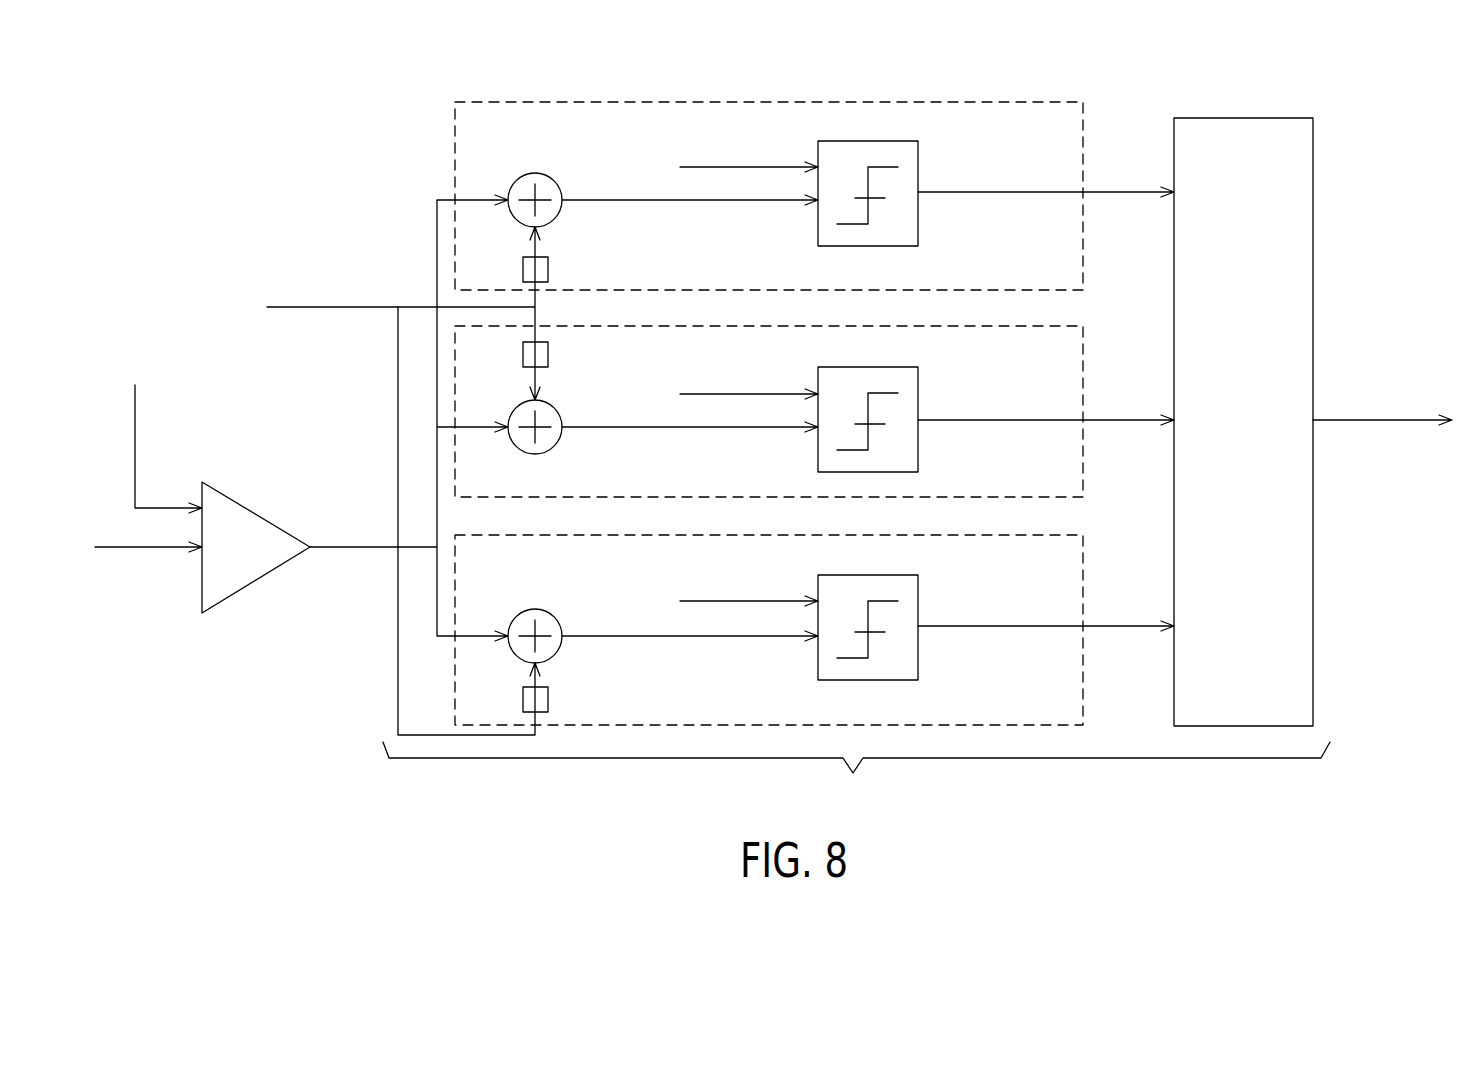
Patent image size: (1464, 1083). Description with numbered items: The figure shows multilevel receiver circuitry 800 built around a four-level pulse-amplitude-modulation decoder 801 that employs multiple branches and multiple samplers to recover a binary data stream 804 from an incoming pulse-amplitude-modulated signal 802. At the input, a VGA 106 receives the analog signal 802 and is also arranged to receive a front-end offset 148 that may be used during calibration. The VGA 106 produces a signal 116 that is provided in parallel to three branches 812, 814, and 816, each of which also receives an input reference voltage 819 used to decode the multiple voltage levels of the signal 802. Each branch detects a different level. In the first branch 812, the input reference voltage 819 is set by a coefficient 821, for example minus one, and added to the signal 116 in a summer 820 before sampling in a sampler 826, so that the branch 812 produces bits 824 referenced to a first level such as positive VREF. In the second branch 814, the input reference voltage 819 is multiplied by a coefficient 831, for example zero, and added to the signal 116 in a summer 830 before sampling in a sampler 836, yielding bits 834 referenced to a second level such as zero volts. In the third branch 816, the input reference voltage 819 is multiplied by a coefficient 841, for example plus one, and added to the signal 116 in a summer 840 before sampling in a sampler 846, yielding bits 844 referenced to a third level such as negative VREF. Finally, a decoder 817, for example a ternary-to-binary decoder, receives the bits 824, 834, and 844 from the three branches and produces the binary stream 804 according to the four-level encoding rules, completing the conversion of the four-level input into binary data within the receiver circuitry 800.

The multilevel receiver circuitry 800 is at (335, 98).
The PAM-4 decoder 801 is at (856, 454).
The PAM-4 signal 802 is at (112, 547).
The binary data stream 804 is at (1375, 420).
The VGA 106 is at (258, 580).
The front-end offset 148 is at (135, 447).
The signal 116 is at (350, 546).
The input reference voltage 819 is at (318, 308).
The branch 812 is at (1083, 143).
The branch 814 is at (1083, 370).
The branch 816 is at (1083, 580).
The summer 820 is at (553, 218).
The summer 830 is at (556, 410).
The summer 840 is at (553, 655).
The coefficient 821 is at (548, 262).
The coefficient 831 is at (523, 350).
The coefficient 841 is at (548, 700).
The bits 824 is at (745, 167).
The bits 834 is at (745, 394).
The bits 844 is at (745, 601).
The sampler 826 is at (918, 157).
The sampler 836 is at (918, 384).
The sampler 846 is at (918, 590).
The decoder 817 is at (1262, 456).